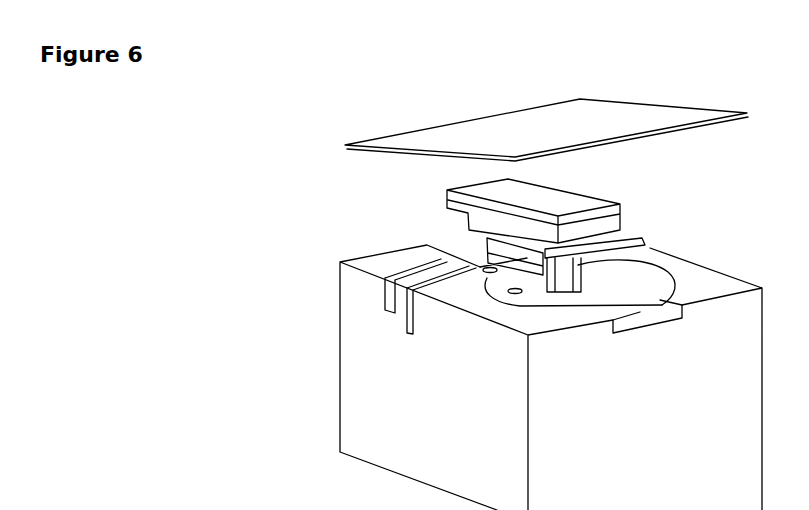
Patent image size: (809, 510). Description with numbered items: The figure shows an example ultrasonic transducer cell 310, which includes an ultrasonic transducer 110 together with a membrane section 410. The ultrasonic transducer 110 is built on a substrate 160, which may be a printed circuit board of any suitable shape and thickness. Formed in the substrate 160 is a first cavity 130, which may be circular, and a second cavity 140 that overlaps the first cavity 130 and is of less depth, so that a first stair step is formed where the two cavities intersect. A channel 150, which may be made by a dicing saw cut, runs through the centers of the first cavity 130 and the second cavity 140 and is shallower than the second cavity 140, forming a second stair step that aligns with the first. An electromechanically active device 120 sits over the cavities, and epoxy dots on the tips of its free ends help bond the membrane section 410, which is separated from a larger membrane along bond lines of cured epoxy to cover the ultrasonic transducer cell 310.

The ultrasonic transducer 110 is at (366, 259).
The electromechanically active device 120 is at (606, 200).
The first cavity 130 is at (623, 305).
The second cavity 140 is at (550, 283).
The channel 150 is at (483, 262).
The substrate 160 is at (360, 400).
The ultrasonic transducer cell 310 is at (338, 298).
The membrane section 410 is at (345, 145).